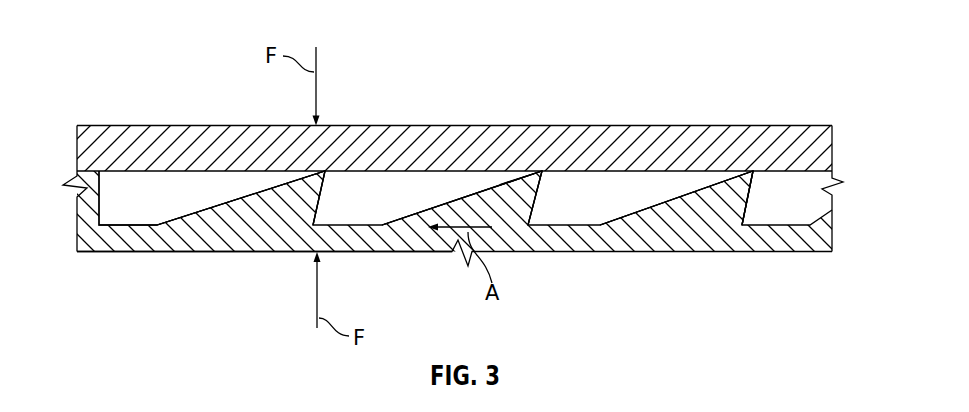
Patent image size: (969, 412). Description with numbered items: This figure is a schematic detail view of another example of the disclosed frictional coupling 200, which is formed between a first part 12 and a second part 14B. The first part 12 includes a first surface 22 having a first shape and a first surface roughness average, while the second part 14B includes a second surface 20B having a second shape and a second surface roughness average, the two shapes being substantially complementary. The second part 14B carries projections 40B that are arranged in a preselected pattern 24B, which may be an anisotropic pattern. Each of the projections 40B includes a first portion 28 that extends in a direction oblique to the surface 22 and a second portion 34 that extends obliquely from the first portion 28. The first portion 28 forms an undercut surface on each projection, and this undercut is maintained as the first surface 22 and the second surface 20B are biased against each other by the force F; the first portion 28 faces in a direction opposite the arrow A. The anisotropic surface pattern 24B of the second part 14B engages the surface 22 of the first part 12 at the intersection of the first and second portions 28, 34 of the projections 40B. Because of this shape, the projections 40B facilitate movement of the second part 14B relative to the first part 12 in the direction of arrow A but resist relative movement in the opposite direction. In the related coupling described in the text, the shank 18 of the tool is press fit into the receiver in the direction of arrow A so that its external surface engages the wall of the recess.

The frictional coupling 200 is at (504, 68).
The first part 12 is at (836, 148).
The second part 14B is at (836, 225).
The cylindrical shank 18 is at (310, 242).
The first surface 22 is at (183, 180).
The second surface 20B is at (242, 197).
The second portion 34 is at (280, 190).
The projections 40B is at (302, 190).
The preselected pattern 24B is at (521, 180).
The first portion 28 is at (744, 189).